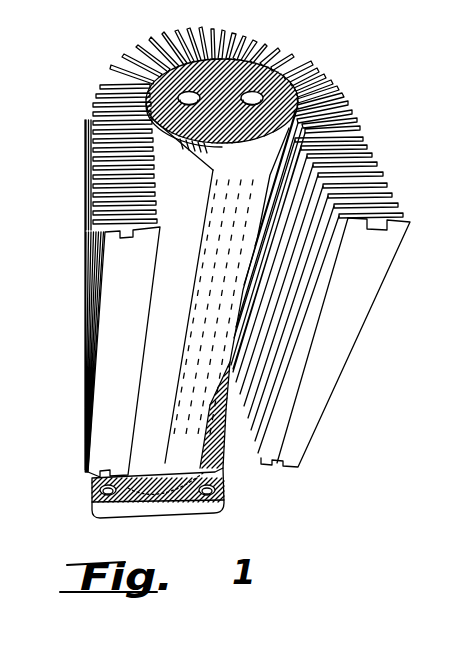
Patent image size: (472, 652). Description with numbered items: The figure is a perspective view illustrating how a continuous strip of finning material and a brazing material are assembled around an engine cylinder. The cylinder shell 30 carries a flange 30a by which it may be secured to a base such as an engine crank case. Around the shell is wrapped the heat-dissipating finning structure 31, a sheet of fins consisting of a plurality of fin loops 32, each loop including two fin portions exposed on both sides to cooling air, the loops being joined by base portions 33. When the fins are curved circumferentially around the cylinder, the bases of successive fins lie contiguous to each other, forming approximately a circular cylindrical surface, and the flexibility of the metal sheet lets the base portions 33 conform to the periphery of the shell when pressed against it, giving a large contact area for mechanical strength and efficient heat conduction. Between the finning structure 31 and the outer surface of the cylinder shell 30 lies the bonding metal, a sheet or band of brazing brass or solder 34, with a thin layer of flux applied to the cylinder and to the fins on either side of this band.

The cylinder shell 30 is at (162, 462).
The flange 30a is at (218, 507).
The finning structure 31 is at (341, 377).
The fin loops 32 is at (105, 233).
The base portions 33 is at (155, 208).
The brazing solder 34 is at (142, 385).